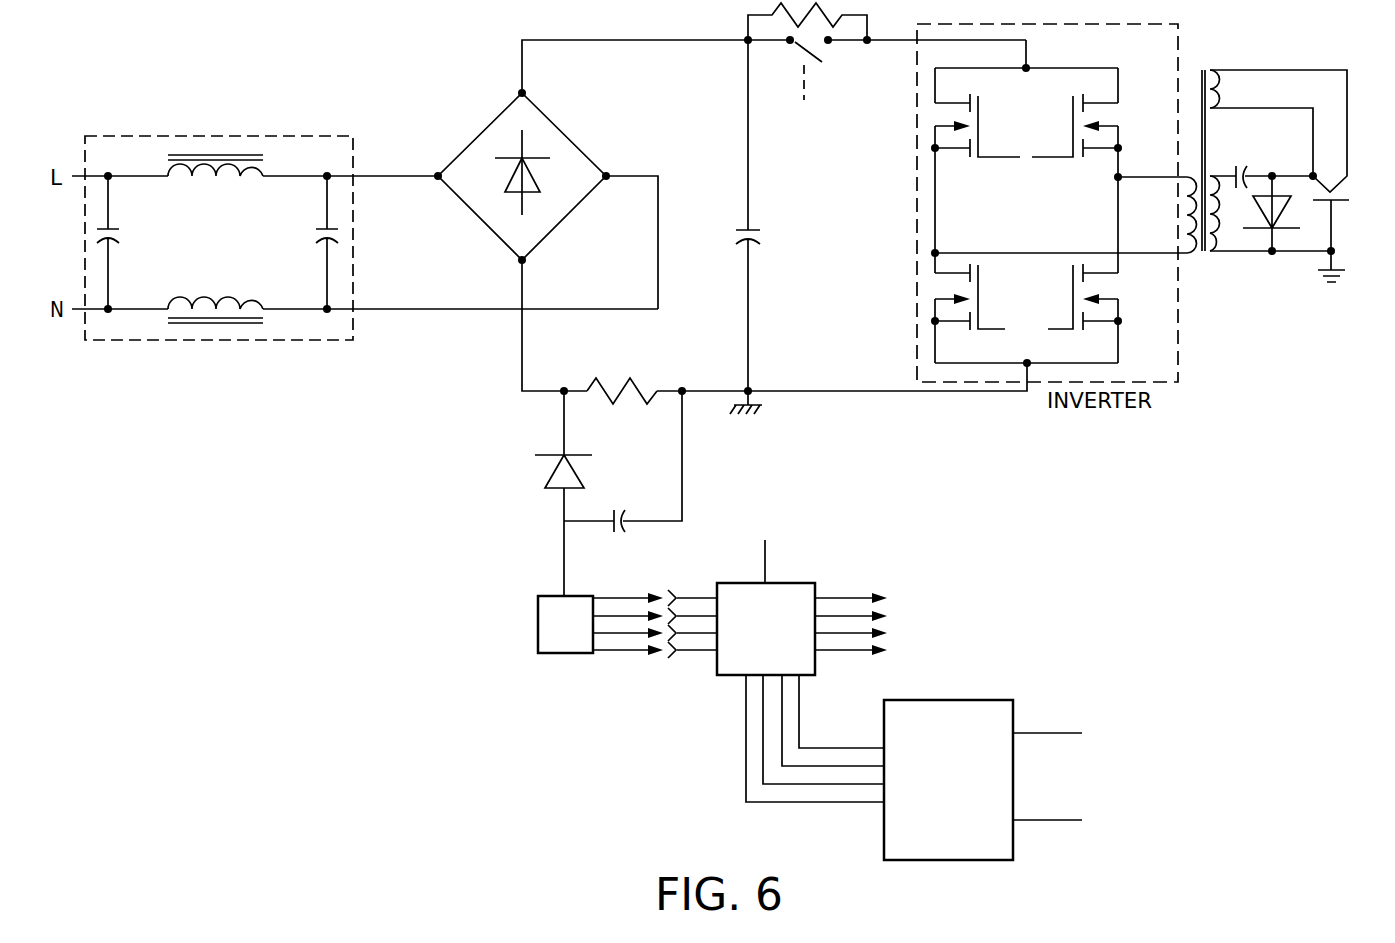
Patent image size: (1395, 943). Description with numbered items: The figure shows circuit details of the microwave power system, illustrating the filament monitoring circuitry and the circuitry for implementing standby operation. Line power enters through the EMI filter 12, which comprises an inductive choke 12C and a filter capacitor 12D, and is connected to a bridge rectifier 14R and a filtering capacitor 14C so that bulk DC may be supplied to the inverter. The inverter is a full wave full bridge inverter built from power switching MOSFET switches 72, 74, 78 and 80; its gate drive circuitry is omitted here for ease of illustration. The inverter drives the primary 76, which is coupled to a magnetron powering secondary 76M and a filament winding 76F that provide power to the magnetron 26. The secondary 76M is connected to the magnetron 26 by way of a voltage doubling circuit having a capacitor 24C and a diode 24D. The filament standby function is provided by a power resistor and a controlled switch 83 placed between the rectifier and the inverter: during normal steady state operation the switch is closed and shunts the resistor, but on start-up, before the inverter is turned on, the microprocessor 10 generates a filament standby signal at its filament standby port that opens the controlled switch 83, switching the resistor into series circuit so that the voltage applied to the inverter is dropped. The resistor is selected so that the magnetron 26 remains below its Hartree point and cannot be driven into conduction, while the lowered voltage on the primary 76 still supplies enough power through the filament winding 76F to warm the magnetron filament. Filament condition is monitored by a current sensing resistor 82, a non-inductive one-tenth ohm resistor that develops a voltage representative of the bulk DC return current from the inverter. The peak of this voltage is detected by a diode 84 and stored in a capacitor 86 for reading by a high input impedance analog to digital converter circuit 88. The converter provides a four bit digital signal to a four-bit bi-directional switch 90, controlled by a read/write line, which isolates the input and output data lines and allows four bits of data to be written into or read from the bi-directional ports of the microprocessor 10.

The microprocessor 10 is at (991, 767).
The EMI filter 12 is at (219, 208).
The inductive choke 12C is at (192, 176).
The filter capacitor 12D is at (112, 238).
The bridge rectifier 14R is at (555, 124).
The filtering capacitor 14C is at (745, 226).
The controlled switch 83 is at (802, 57).
The MOSFET switch 72 is at (934, 111).
The MOSFET switch 74 is at (932, 306).
The MOSFET switch 78 is at (1117, 112).
The MOSFET switch 80 is at (1118, 300).
The primary 76 is at (1141, 172).
The filament winding 76F is at (1211, 69).
The magnetron powering secondary 76M is at (1214, 252).
The capacitor 24C is at (1238, 160).
The diode 24D is at (1276, 222).
The magnetron 26 is at (1349, 226).
The current sensing resistor 82 is at (648, 385).
The diode 84 is at (548, 481).
The capacitor 86 is at (626, 528).
The analog to digital converter circuit 88 is at (565, 654).
The four-bit bi-directional switch 90 is at (713, 673).